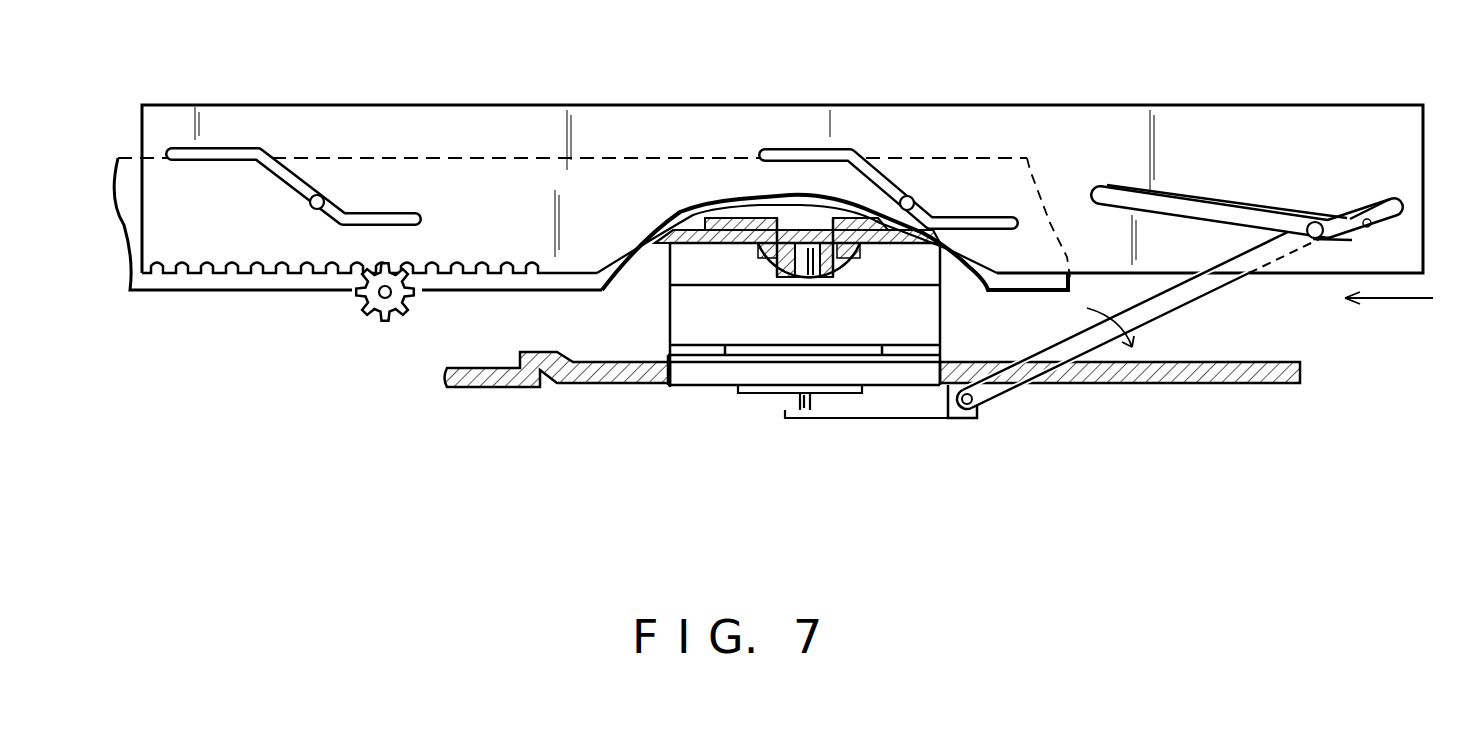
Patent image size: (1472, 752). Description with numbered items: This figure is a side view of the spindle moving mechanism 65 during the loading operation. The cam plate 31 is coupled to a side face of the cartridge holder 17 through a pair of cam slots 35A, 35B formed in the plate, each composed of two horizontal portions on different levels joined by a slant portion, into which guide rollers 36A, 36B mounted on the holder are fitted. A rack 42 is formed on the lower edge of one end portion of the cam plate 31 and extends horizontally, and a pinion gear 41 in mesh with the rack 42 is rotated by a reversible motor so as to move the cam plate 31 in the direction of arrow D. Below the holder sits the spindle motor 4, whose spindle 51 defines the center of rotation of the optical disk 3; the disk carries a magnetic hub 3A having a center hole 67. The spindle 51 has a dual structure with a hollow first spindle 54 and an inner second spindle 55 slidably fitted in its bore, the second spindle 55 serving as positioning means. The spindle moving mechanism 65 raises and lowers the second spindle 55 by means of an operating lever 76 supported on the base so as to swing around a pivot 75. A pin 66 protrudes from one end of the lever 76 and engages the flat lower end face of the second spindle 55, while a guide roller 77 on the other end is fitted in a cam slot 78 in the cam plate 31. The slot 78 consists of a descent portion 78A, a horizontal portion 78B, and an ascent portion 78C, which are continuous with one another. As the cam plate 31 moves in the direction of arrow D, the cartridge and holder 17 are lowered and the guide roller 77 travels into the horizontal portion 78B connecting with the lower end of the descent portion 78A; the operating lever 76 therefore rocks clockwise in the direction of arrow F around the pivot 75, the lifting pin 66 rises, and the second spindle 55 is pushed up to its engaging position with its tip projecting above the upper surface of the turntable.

The cam plate 31 is at (1213, 127).
The cartridge holder 17 is at (550, 282).
The rack 42 is at (227, 275).
The pinion gear 41 is at (393, 300).
The cam slot 35A is at (289, 180).
The guide roller 36A is at (324, 200).
The cam slot 35B is at (880, 190).
The guide roller 36B is at (915, 203).
The optical disk 3 is at (690, 237).
The center hole 67 is at (793, 230).
The hub 3A is at (867, 248).
The second spindle 55 is at (773, 270).
The first spindle 54 is at (847, 270).
The spindle 51 is at (821, 300).
The spindle motor 4 is at (653, 417).
The pin 66 is at (793, 398).
The spindle moving mechanism 65 is at (1078, 392).
The operating lever 76 is at (1183, 290).
The pivot 75 is at (987, 407).
The cam slot 78 is at (1385, 220).
The descent portion 78A is at (1140, 193).
The horizontal portion 78B is at (1340, 236).
The ascent portion 78C is at (1387, 202).
The guide roller 77 is at (1318, 222).
The direction of lever rocking F is at (1122, 333).
The direction of cam plate movement D is at (1402, 298).